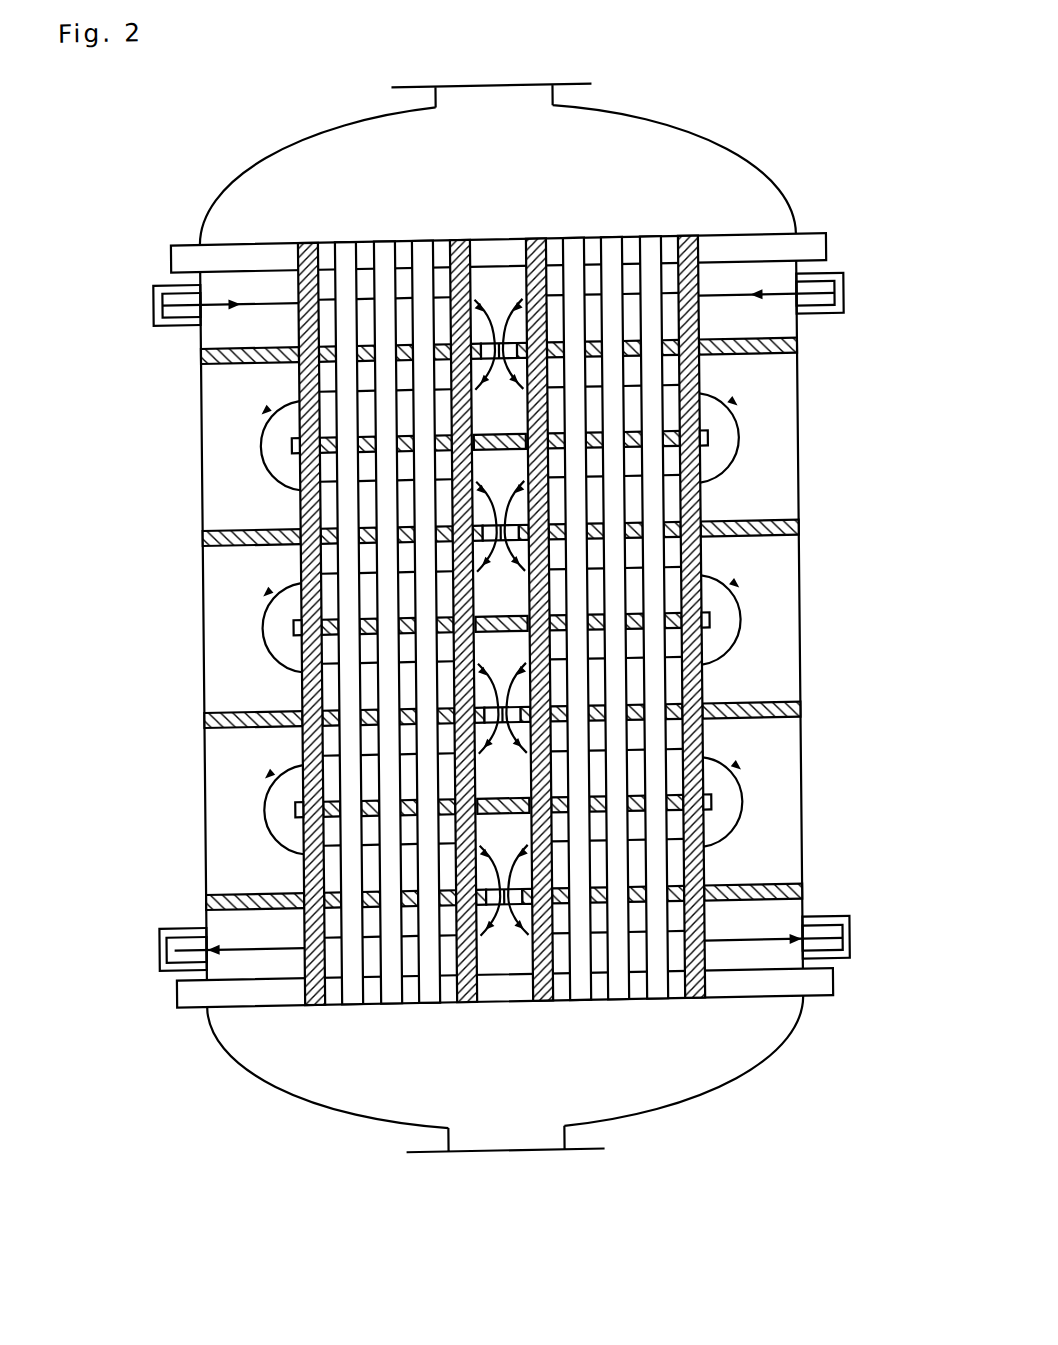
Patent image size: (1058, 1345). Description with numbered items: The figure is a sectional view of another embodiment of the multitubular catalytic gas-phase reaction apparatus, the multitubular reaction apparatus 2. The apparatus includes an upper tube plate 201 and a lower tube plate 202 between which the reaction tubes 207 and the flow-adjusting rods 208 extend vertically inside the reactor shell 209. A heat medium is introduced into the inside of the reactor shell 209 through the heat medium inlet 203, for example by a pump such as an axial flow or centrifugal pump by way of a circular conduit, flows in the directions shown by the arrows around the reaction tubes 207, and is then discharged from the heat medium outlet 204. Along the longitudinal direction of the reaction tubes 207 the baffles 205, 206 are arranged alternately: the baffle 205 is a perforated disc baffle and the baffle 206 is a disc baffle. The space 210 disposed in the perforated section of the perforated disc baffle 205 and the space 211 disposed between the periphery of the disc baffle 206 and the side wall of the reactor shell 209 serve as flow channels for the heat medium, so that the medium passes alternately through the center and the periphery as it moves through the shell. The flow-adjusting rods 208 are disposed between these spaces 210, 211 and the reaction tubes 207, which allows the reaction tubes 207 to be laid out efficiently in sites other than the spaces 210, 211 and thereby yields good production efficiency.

The multitubular reaction apparatus 2 is at (129, 149).
The upper tube plate 201 is at (813, 257).
The lower tube plate 202 is at (820, 994).
The heat medium inlet 203 is at (176, 302).
The heat medium outlet 204 is at (150, 950).
The perforated disc baffle 205 is at (767, 364).
The disc baffle 206 is at (286, 446).
The reaction tube 207 is at (345, 988).
The flow-adjusting rod 208 is at (307, 1005).
The reactor shell 209 is at (798, 623).
The space in perforated section of perforated disc baffle 210 is at (521, 1013).
The space between periphery of disc baffle and reactor shell side wall 211 is at (295, 1010).